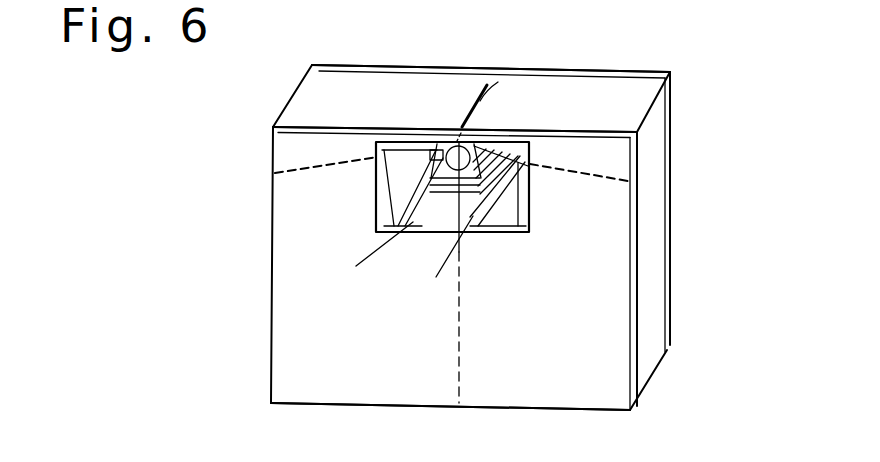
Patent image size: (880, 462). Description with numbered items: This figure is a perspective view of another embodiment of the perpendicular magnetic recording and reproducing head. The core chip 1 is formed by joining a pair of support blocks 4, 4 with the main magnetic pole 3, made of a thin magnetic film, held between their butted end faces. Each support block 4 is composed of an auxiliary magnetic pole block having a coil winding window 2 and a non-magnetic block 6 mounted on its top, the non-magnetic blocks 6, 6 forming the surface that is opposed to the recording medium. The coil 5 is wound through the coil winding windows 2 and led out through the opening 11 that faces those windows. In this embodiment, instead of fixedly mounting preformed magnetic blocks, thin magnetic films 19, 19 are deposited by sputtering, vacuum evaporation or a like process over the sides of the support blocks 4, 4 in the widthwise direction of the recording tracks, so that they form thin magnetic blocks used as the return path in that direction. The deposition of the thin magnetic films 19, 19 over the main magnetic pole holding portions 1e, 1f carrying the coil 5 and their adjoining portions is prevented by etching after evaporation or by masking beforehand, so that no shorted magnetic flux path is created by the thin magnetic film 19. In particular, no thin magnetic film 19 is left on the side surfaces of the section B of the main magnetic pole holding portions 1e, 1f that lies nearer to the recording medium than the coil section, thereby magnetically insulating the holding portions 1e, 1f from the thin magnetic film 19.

The core chip 1 is at (720, 308).
The main magnetic pole holding portion 1e is at (407, 234).
The main magnetic pole holding portion 1f is at (463, 217).
The coil winding window 2 is at (385, 208).
The main magnetic pole 3 is at (505, 69).
The support block 4 is at (377, 393).
The coil 5 is at (460, 275).
The non-magnetic block 6 is at (660, 130).
The opening 11 is at (392, 216).
The thin magnetic film 19 is at (350, 72).
The section of the main magnetic pole holding portions B is at (488, 129).